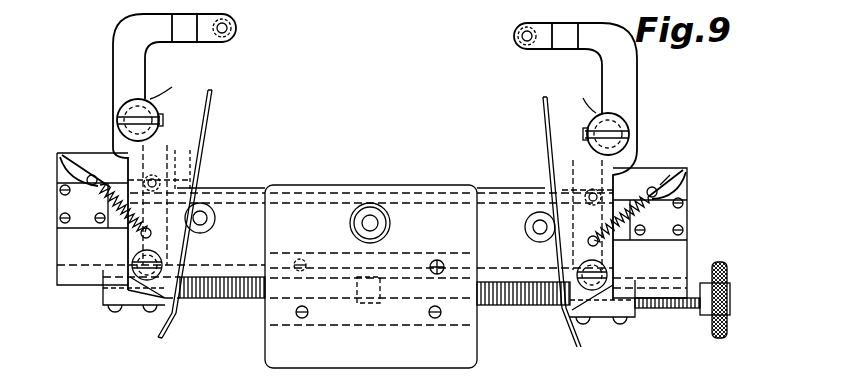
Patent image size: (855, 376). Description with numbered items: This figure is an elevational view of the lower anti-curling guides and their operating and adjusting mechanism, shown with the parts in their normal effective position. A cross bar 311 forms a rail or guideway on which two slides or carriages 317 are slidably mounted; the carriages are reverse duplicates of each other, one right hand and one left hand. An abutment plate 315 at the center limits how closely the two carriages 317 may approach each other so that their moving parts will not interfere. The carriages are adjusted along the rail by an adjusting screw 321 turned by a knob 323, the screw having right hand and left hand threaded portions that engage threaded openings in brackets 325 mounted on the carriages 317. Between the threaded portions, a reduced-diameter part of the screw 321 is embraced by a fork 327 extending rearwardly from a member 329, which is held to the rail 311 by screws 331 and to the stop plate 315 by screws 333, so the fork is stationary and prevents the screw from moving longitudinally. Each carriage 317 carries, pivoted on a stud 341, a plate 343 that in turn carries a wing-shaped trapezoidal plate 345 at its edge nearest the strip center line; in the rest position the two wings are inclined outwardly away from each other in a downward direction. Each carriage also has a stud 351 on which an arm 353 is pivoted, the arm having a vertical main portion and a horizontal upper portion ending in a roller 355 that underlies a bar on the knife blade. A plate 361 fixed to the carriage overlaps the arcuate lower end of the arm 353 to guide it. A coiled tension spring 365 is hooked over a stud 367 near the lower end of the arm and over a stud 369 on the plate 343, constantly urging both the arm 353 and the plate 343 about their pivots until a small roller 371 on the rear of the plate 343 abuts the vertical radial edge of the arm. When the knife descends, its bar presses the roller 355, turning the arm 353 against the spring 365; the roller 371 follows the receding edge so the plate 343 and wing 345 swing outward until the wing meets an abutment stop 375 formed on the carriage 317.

The cross bar 311 is at (500, 195).
The abutment plate 315 is at (470, 352).
The carriage 317 is at (70, 241).
The adjusting screw 321 is at (222, 300).
The knob 323 is at (727, 270).
The bracket 325 is at (132, 306).
The fork 327 is at (367, 305).
The member 329 is at (402, 253).
The screw 331 is at (305, 258).
The screw 333 is at (308, 313).
The stud 341 is at (133, 262).
The plate 343 is at (180, 160).
The wing plate 345 is at (206, 132).
The stud 351 is at (118, 120).
The arm 353 is at (122, 80).
The roller 355 is at (236, 22).
The plate 361 is at (66, 171).
The coiled tension spring 365 is at (94, 176).
The stud 367 is at (672, 166).
The stud 369 is at (590, 240).
The roller 371 is at (193, 178).
The abutment stop 375 is at (180, 94).